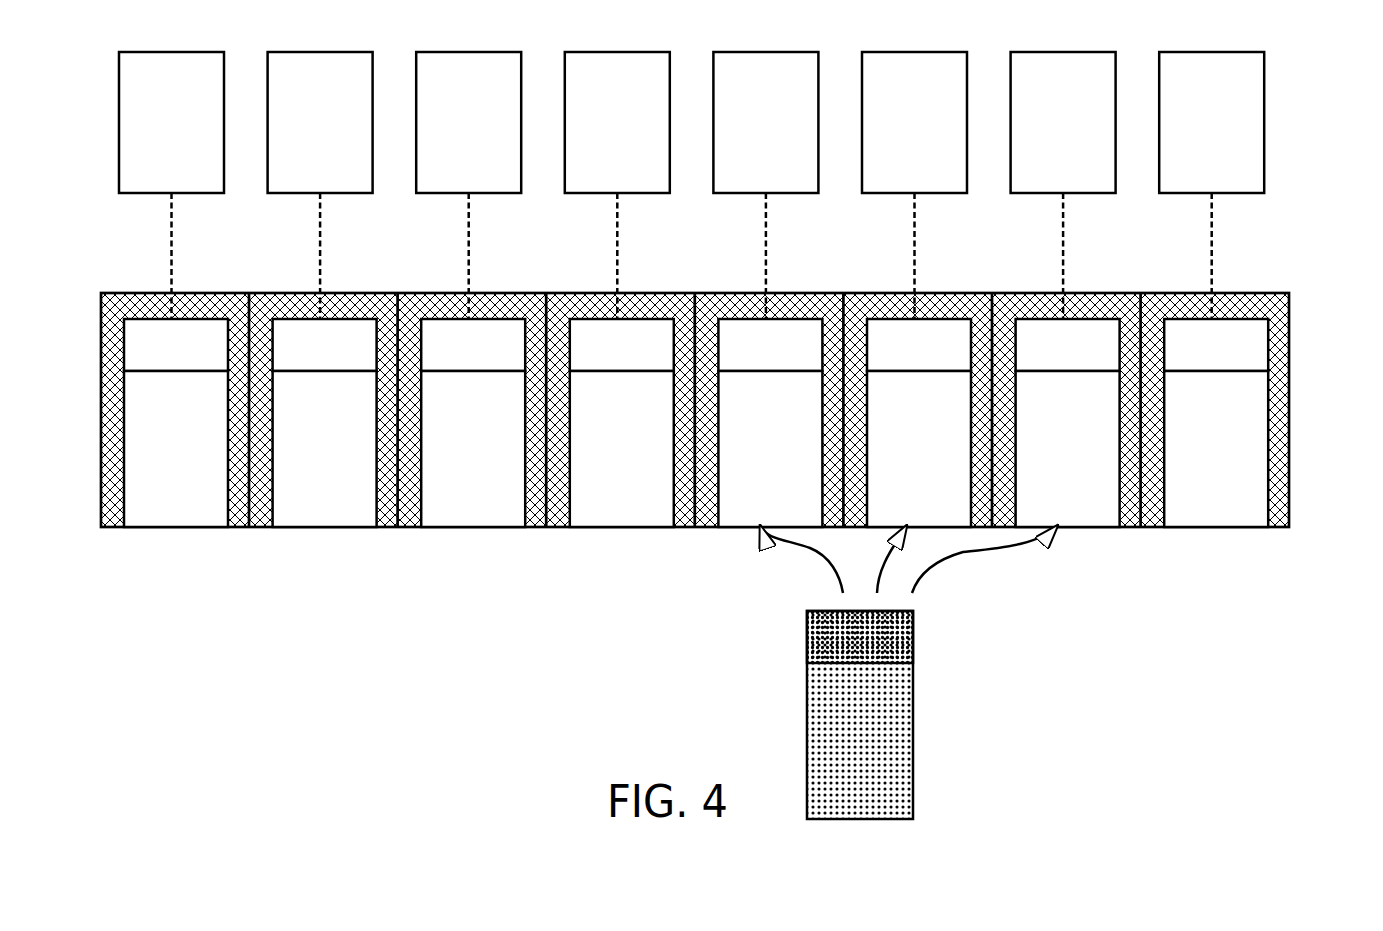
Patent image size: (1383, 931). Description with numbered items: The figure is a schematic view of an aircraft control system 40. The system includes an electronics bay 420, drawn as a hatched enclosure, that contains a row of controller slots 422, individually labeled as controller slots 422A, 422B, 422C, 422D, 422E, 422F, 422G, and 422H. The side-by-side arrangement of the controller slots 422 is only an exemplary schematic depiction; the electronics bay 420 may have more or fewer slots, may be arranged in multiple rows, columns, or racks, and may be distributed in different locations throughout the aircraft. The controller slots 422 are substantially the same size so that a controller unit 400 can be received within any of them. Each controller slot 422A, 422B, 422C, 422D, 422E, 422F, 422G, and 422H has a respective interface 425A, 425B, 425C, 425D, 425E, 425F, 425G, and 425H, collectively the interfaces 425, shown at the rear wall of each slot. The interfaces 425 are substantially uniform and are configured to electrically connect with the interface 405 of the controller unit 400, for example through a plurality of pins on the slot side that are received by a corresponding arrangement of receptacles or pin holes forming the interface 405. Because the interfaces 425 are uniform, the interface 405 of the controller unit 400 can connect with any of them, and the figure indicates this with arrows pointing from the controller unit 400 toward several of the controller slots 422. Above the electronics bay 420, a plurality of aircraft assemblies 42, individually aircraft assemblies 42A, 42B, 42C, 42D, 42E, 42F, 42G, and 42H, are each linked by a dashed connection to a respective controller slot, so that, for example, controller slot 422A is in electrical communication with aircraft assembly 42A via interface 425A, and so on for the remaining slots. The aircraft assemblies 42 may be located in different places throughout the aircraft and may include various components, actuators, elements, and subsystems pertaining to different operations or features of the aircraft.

The aircraft control system 40 is at (96, 265).
The aircraft assemblies 42 is at (747, 185).
The aircraft assembly 42A is at (171, 185).
The aircraft assembly 42B is at (320, 185).
The aircraft assembly 42C is at (468, 185).
The aircraft assembly 42D is at (617, 185).
The aircraft assembly 42E is at (765, 185).
The aircraft assembly 42F is at (914, 185).
The aircraft assembly 42G is at (1063, 185).
The aircraft assembly 42H is at (1211, 185).
The electronics bay 420 is at (100, 484).
The interfaces 425 is at (744, 289).
The interface 425A is at (150, 354).
The interface 425B is at (351, 354).
The interface 425C is at (447, 354).
The interface 425D is at (648, 354).
The interface 425E is at (744, 354).
The interface 425F is at (893, 354).
The interface 425G is at (1094, 354).
The interface 425H is at (1190, 354).
The controller slots 422 is at (744, 480).
The controller slot 422A is at (176, 449).
The controller slot 422B is at (325, 449).
The controller slot 422C is at (473, 449).
The controller slot 422D is at (622, 449).
The controller slot 422E is at (770, 449).
The controller slot 422F is at (919, 449).
The controller slot 422G is at (1068, 449).
The controller slot 422H is at (1216, 449).
The controller unit 400 is at (860, 715).
The interface 405 is at (841, 651).